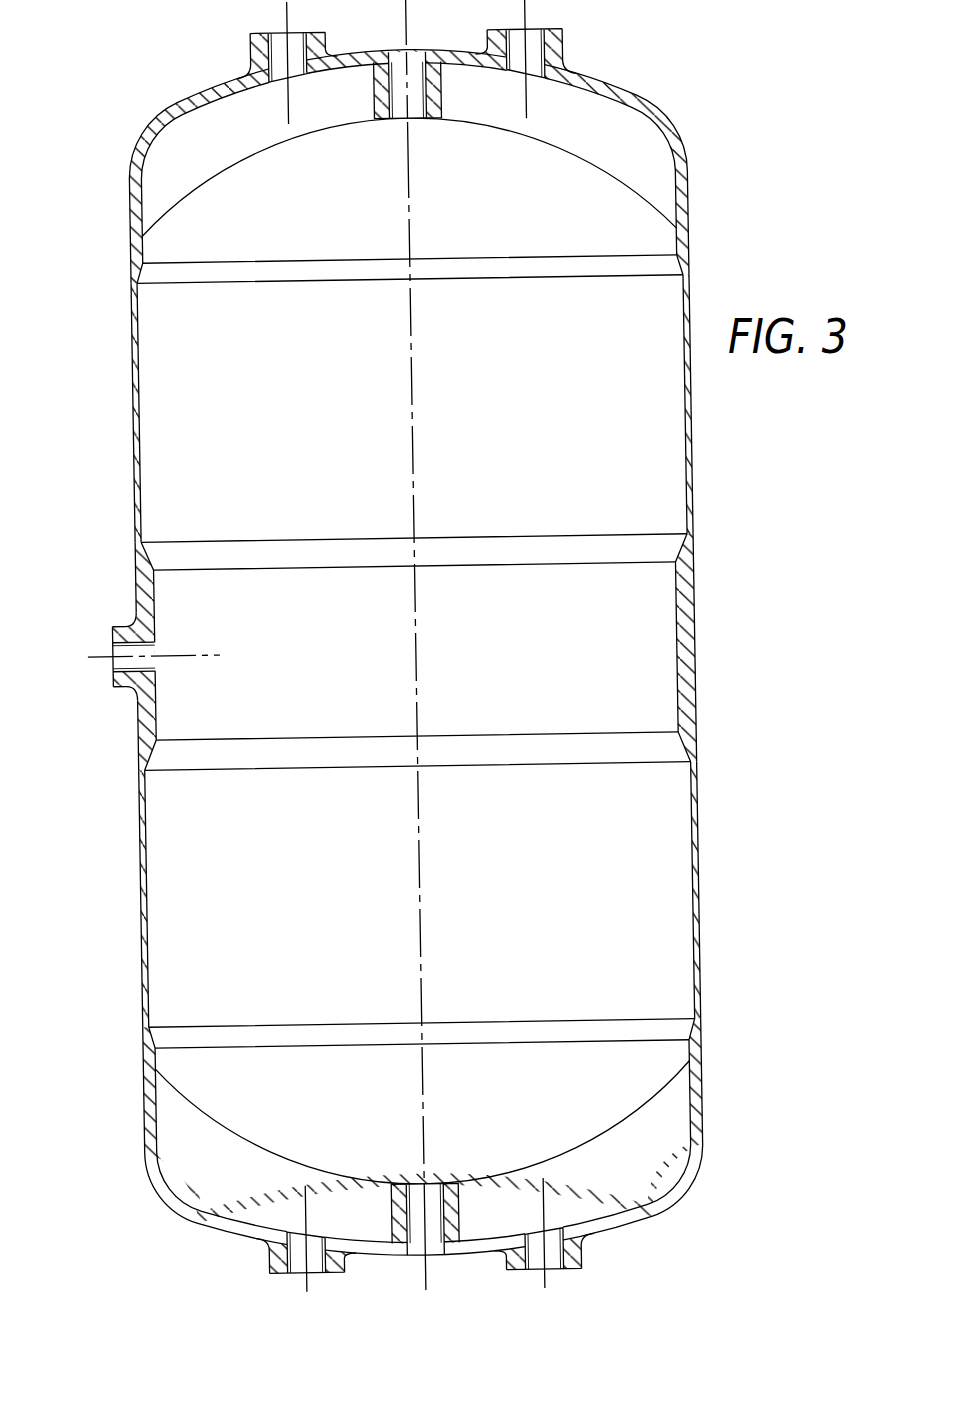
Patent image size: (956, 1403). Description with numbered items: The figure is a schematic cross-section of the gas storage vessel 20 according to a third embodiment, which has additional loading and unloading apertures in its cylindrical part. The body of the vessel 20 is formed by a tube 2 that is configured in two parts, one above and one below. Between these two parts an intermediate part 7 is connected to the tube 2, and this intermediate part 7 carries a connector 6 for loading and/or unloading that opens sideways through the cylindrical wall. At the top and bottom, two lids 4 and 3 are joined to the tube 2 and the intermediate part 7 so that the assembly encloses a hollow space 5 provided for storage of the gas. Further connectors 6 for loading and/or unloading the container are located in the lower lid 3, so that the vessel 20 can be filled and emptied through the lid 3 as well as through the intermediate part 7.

The vessel 20 is at (101, 309).
The tube 2 is at (135, 410).
The lid 3 is at (152, 1147).
The lid 4 is at (165, 117).
The hollow space 5 is at (205, 922).
The connector 6 is at (110, 637).
The intermediate part 7 is at (185, 604).